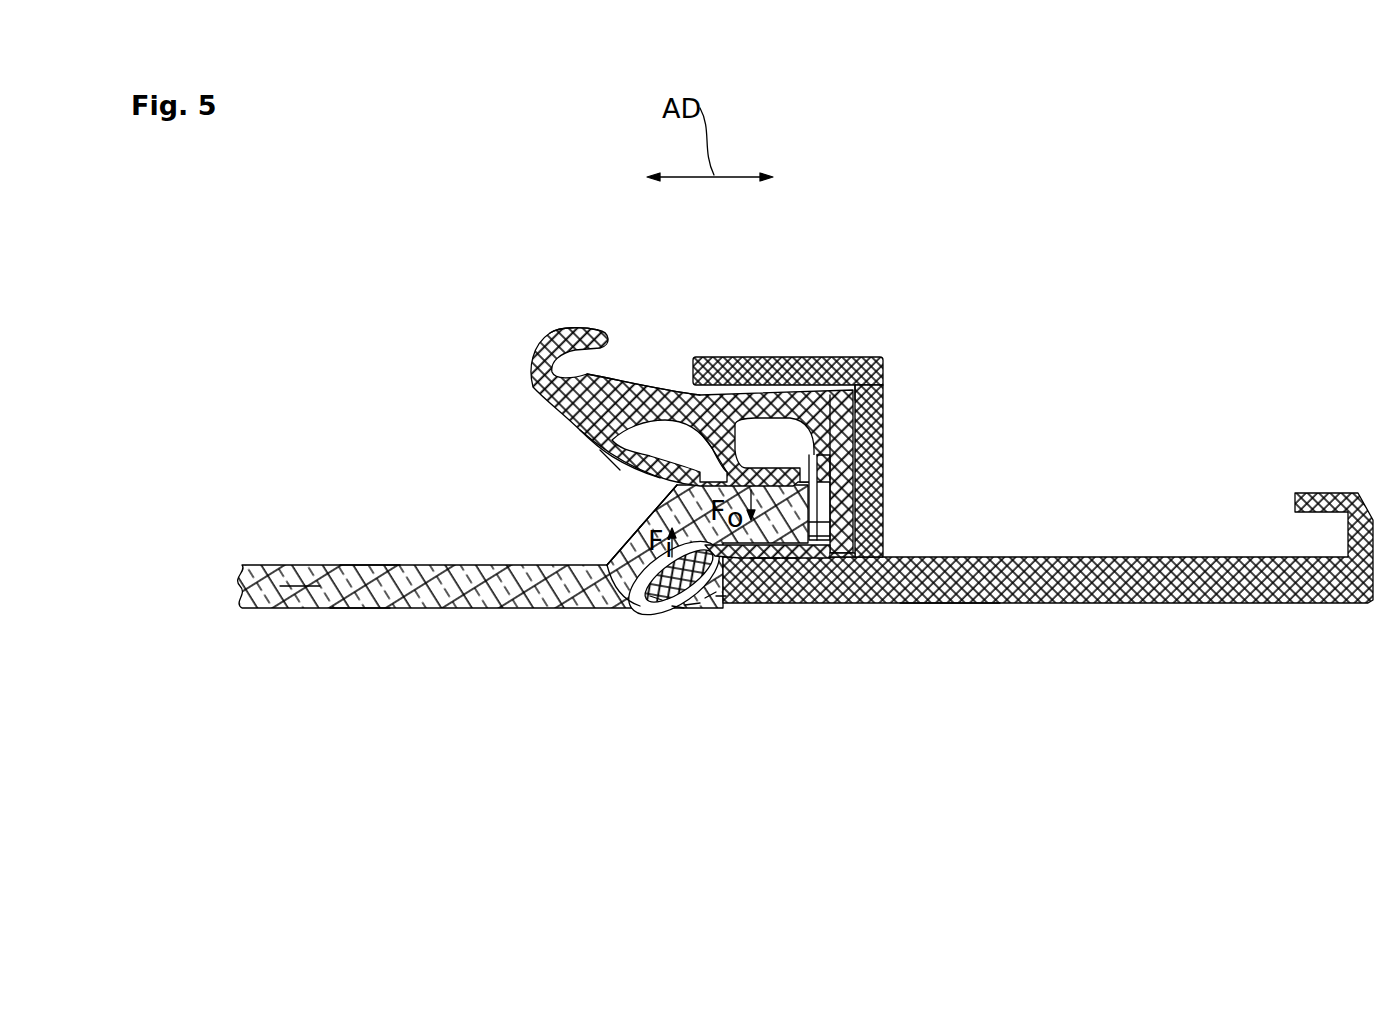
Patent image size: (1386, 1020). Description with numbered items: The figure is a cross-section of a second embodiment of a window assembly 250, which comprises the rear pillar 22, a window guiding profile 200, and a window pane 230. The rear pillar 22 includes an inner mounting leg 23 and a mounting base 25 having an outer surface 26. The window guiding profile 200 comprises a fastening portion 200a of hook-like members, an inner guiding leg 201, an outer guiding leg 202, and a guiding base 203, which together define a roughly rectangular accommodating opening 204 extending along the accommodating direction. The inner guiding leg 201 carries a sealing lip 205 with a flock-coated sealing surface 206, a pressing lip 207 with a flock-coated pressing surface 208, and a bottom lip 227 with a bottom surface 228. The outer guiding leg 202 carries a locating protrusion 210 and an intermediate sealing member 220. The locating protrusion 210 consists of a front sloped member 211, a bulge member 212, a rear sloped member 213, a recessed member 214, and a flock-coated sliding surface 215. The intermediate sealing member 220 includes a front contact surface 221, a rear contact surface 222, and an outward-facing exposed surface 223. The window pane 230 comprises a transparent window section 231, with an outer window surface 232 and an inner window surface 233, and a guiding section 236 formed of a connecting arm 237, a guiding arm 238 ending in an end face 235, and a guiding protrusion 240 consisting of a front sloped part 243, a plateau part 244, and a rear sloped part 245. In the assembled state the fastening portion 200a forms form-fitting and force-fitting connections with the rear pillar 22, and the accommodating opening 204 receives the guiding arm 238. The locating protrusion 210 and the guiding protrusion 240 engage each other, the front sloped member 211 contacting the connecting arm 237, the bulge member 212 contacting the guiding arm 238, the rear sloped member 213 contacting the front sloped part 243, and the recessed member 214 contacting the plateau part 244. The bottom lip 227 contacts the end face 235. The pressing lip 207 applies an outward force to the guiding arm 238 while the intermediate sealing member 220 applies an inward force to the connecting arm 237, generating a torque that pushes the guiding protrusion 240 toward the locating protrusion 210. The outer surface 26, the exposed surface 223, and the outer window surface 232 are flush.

The rear pillar 22 is at (982, 556).
The inner mounting leg 23 is at (782, 382).
The mounting base 25 is at (878, 412).
The outer surface 26 is at (962, 604).
The window guiding profile 200 is at (512, 325).
The fastening portion 200a is at (570, 322).
The inner guiding leg 201 is at (588, 400).
The outer guiding leg 202 is at (667, 603).
The guiding base 203 is at (860, 387).
The accommodating opening 204 is at (596, 479).
The sealing lip 205 is at (640, 448).
The sealing surface 206 is at (616, 470).
The pressing lip 207 is at (716, 448).
The pressing surface 208 is at (700, 445).
The locating protrusion 210 is at (745, 572).
The front sloped member 211 is at (642, 590).
The bulge member 212 is at (722, 600).
The rear sloped member 213 is at (660, 510).
The recessed member 214 is at (772, 570).
The sliding surface 215 is at (812, 572).
The intermediate sealing member 220 is at (692, 607).
The front contact surface 221 is at (657, 597).
The rear contact surface 222 is at (712, 600).
The exposed surface 223 is at (678, 610).
The bottom lip 227 is at (828, 395).
The bottom surface 228 is at (805, 470).
The window pane 230 is at (280, 557).
The window section 231 is at (303, 585).
The outer window surface 232 is at (358, 612).
The inner window surface 233 is at (362, 565).
The end face 235 is at (846, 458).
The guiding section 236 is at (548, 547).
The connecting arm 237 is at (622, 548).
The guiding arm 238 is at (832, 478).
The guiding protrusion 240 is at (758, 580).
The front sloped part 243 is at (818, 522).
The plateau part 244 is at (790, 566).
The rear sloped part 245 is at (826, 536).
The window assembly 250 is at (985, 240).